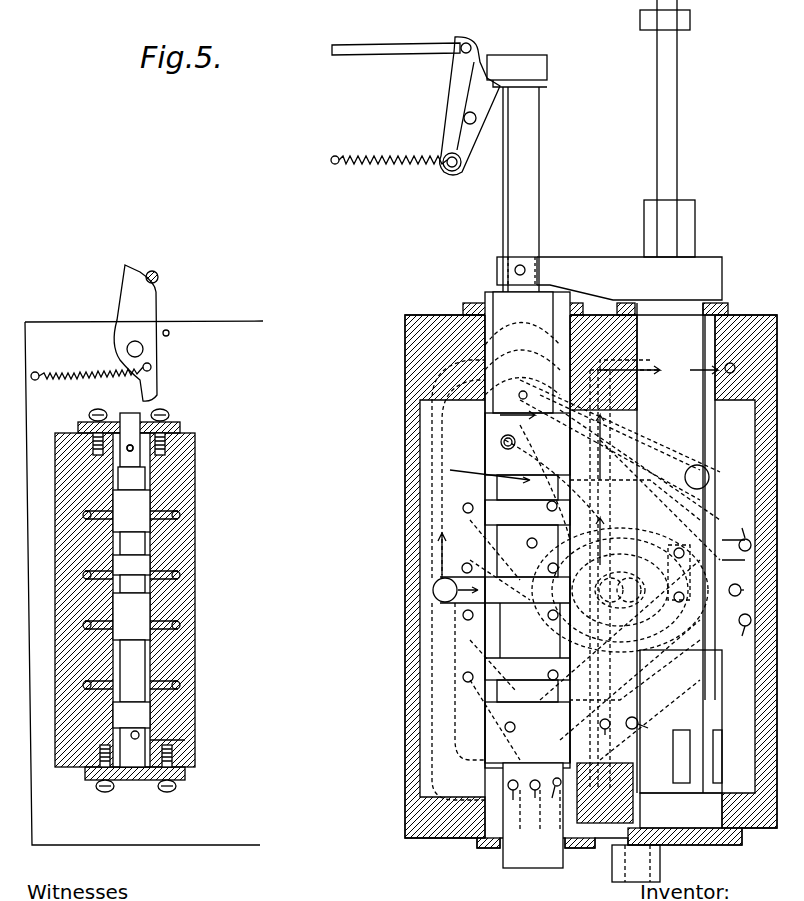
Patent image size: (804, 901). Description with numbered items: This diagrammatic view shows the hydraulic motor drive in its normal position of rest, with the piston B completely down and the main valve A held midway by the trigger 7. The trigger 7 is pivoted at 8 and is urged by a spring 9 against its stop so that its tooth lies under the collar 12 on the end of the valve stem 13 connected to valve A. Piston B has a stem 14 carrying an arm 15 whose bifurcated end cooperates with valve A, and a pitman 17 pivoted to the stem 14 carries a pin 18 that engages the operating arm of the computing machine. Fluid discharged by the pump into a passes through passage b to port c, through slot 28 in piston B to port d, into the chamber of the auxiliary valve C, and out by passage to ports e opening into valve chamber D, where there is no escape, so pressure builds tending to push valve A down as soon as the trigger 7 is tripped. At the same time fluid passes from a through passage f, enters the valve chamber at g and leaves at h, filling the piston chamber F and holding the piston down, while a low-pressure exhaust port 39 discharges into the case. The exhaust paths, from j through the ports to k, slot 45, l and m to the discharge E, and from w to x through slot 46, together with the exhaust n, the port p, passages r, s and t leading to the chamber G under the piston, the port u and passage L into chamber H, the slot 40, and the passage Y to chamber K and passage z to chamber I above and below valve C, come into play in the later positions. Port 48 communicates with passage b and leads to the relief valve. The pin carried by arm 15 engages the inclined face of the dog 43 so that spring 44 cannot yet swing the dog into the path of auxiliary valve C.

The trigger 7 is at (462, 90).
The pivot 8 is at (372, 55).
The spring 9 is at (382, 166).
The collar 12 is at (517, 71).
The valve stem 13 is at (521, 189).
The piston stem 14 is at (670, 547).
The arm 15 is at (629, 278).
The pitman 17 is at (672, 162).
The pin 18 is at (640, 20).
The slot 28 is at (683, 600).
The exhaust port 39 is at (733, 373).
The slot 40 is at (673, 765).
The dog 43 is at (141, 333).
The spring 44 is at (80, 372).
The slot 45 is at (735, 560).
The slot 46 is at (722, 760).
The port 48 is at (712, 480).
The valve A is at (527, 588).
The piston B is at (681, 721).
The auxiliary valve C is at (131, 590).
The valve chamber D is at (482, 368).
The discharge E is at (648, 862).
The piston chamber F is at (718, 428).
The chamber G is at (681, 810).
The chamber H is at (568, 840).
The auxiliary valve chamber I is at (185, 740).
The chamber K is at (115, 461).
The inlet passage a is at (455, 590).
The passage b is at (549, 590).
The port c is at (694, 592).
The port d is at (687, 546).
The ports e is at (517, 444).
The passage f is at (441, 540).
The port g is at (490, 469).
The port h is at (577, 466).
The exhaust passage j is at (512, 799).
The port k is at (744, 529).
The port l is at (739, 590).
The passage m is at (646, 728).
The exhaust port n is at (583, 590).
The port p is at (473, 718).
The passage r is at (596, 710).
The passage s is at (579, 592).
The passage t is at (631, 794).
The port u is at (555, 796).
The port w is at (530, 393).
The port x is at (744, 633).
The passage Y is at (538, 540).
The passage z is at (605, 735).
The passage L is at (534, 797).